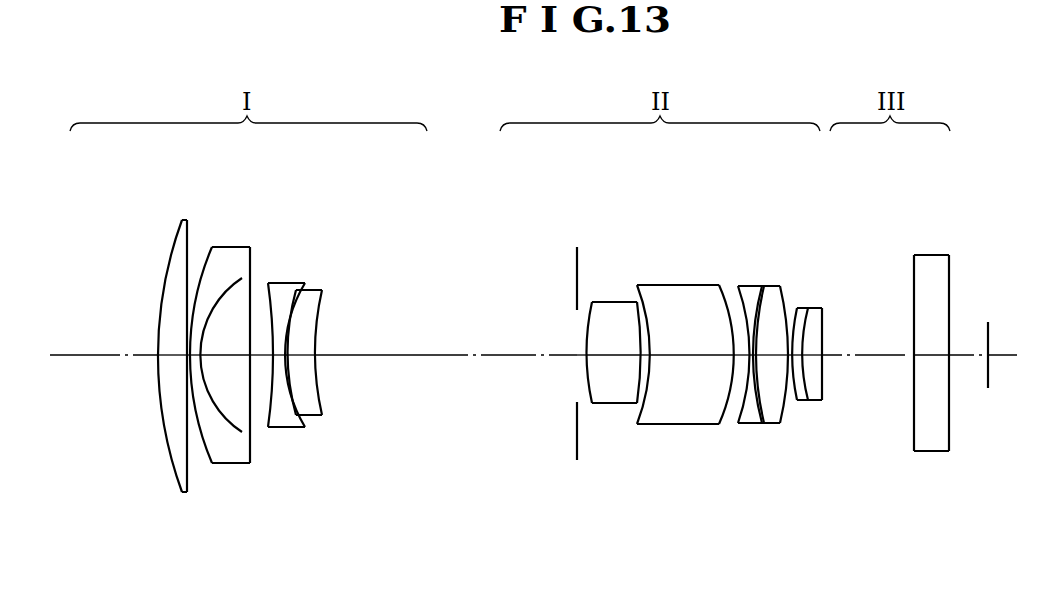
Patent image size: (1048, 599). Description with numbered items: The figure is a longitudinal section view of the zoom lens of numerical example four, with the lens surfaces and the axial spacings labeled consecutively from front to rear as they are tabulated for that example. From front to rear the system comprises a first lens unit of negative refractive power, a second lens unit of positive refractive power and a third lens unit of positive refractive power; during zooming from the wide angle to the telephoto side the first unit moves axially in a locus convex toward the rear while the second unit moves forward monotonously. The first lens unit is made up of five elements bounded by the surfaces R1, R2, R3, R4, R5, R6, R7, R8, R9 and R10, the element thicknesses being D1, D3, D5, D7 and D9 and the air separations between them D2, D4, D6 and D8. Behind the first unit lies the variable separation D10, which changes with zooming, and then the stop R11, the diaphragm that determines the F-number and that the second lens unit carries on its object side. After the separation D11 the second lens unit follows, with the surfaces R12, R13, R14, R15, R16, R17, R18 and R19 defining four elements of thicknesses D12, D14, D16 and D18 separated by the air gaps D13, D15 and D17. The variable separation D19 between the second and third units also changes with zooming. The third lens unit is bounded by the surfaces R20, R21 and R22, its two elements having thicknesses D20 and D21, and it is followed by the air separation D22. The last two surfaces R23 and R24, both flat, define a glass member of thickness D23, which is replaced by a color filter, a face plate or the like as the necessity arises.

The radius of curvature of the first lens surface R1 is at (172, 262).
The radius of curvature of the second lens surface R2 is at (187, 246).
The radius of curvature of the third lens surface R3 is at (195, 258).
The radius of curvature of the fourth lens surface R4 is at (242, 278).
The radius of curvature of the fifth lens surface R5 is at (250, 290).
The radius of curvature of the sixth lens surface R6 is at (266, 282).
The radius of curvature of the seventh lens surface R7 is at (278, 312).
The radius of curvature of the eighth lens surface R8 is at (295, 288).
The radius of curvature of the ninth lens surface R9 is at (320, 289).
The radius of curvature of the tenth lens surface R10 is at (322, 323).
The stop R11 is at (575, 283).
The radius of curvature of the twelfth lens surface R12 is at (597, 302).
The radius of curvature of the thirteenth lens surface R13 is at (624, 302).
The radius of curvature of the fourteenth lens surface R14 is at (652, 305).
The radius of curvature of the fifteenth lens surface R15 is at (733, 335).
The radius of curvature of the sixteenth lens surface R16 is at (740, 300).
The radius of curvature of the seventeenth lens surface R17 is at (758, 308).
The radius of curvature of the eighteenth lens surface R18 is at (771, 290).
The radius of curvature of the nineteenth lens surface R19 is at (790, 295).
The radius of curvature of the twentieth lens surface R20 is at (805, 307).
The radius of curvature of the twenty-first lens surface R21 is at (822, 310).
The radius of curvature of the twenty-second lens surface R22 is at (823, 332).
The radius of curvature of the twenty-third lens surface R23 is at (914, 280).
The radius of curvature of the twenty-fourth lens surface R24 is at (949, 285).
The axial thickness of the first lens element D1 is at (172, 400).
The air separation between the first and second lens elements D2 is at (190, 430).
The axial thickness of the second lens element D3 is at (213, 440).
The air separation between the second and third lens elements D4 is at (216, 440).
The axial thickness of the third lens element D5 is at (250, 430).
The air separation between the third and fourth lens elements D6 is at (268, 430).
The axial thickness of the fourth lens element D7 is at (288, 425).
The air separation between the fourth and fifth lens elements D8 is at (303, 425).
The axial thickness of the fifth lens element D9 is at (322, 405).
The variable air separation between the first lens unit and the stop D10 is at (418, 358).
The air separation between the stop and the second lens unit D11 is at (574, 392).
The axial thickness of the sixth lens element D12 is at (602, 404).
The air separation between the sixth and seventh lens elements D13 is at (636, 408).
The axial thickness of the seventh lens element D14 is at (655, 423).
The air separation between the seventh and eighth lens elements D15 is at (728, 400).
The axial thickness of the eighth lens element D16 is at (745, 424).
The air separation between the eighth and ninth lens elements D17 is at (757, 424).
The axial thickness of the ninth lens element D18 is at (770, 424).
The variable air separation between the second and third lens units D19 is at (791, 424).
The axial thickness of the tenth lens element D20 is at (792, 365).
The axial thickness of the eleventh lens element D21 is at (822, 365).
The air separation between the third lens unit and the glass member D22 is at (835, 362).
The axial thickness of the glass member D23 is at (930, 360).